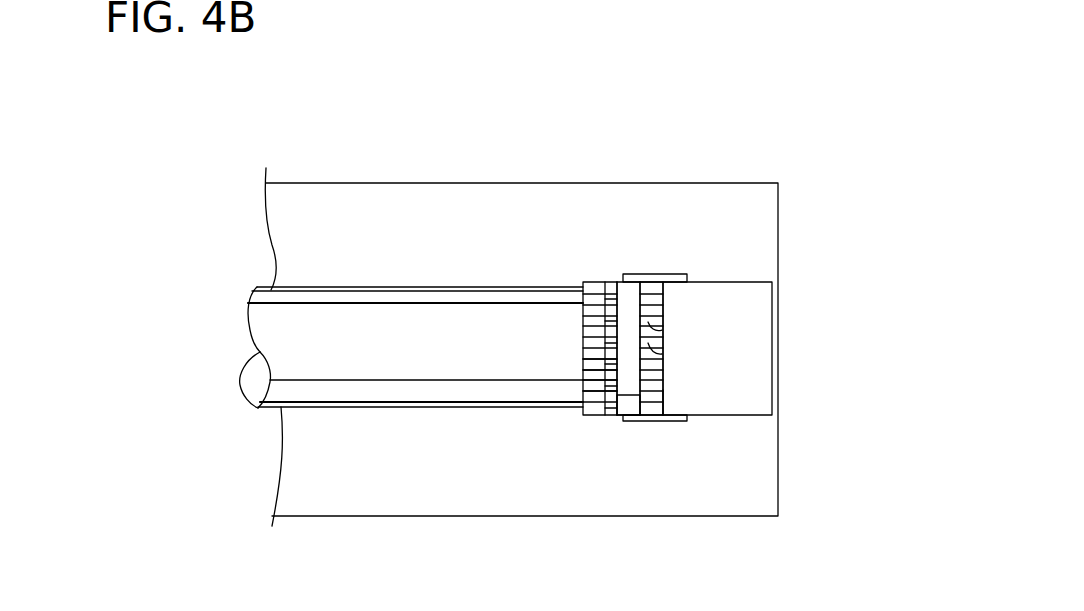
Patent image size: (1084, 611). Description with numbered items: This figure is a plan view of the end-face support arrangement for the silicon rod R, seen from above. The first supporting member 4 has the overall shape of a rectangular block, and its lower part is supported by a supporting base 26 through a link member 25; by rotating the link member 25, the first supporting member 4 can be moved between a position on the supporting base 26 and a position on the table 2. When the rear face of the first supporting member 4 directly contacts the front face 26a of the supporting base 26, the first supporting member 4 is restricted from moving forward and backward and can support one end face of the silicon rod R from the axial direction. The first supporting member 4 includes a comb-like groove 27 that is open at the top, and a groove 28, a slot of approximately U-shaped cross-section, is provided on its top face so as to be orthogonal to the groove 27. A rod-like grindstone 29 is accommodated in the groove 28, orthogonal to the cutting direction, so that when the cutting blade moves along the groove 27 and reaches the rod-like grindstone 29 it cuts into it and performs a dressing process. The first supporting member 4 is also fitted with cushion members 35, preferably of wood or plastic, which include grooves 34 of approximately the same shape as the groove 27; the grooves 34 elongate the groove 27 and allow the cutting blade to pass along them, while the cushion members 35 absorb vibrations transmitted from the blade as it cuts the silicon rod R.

The table 2 is at (768, 478).
The silicon rod R is at (322, 298).
The first supporting member 4 is at (652, 287).
The link member 25 is at (678, 278).
The supporting base 26 is at (757, 388).
The front face 26a is at (659, 397).
The comb-like groove 27 is at (660, 327).
The groove 28 is at (619, 300).
The rod-like grindstone 29 is at (626, 404).
The grooves 34 is at (593, 378).
The cushion members 35 is at (590, 288).